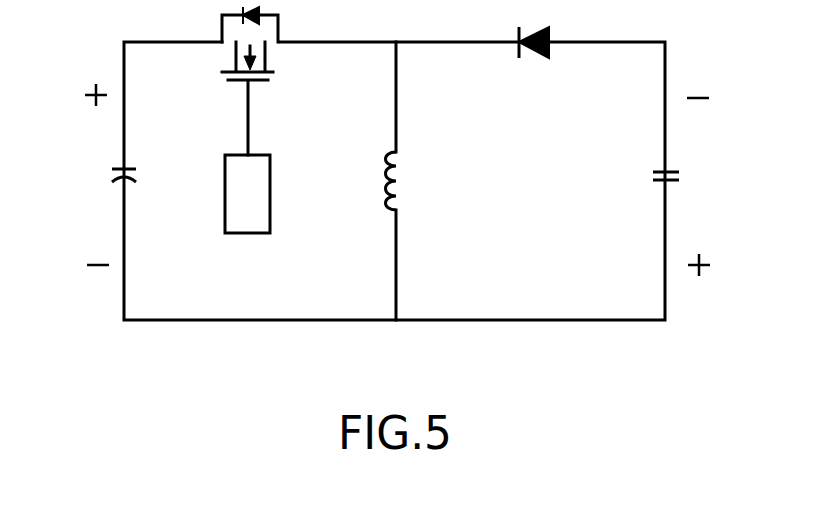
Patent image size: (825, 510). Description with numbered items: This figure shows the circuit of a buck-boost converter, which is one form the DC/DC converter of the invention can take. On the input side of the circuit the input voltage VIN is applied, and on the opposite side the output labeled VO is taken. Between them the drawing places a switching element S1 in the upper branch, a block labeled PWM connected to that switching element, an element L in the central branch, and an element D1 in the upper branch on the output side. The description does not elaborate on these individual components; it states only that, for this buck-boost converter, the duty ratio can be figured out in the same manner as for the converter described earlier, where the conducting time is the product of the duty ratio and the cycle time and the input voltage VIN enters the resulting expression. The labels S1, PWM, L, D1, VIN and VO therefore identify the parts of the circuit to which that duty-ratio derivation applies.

The switch transistor S1 with body diode S1 is at (242, 81).
The PWM controller PWM is at (247, 194).
The inductor L is at (409, 181).
The diode D1 is at (537, 72).
The input voltage VIN is at (98, 168).
The output voltage / capacitor VO is at (689, 185).